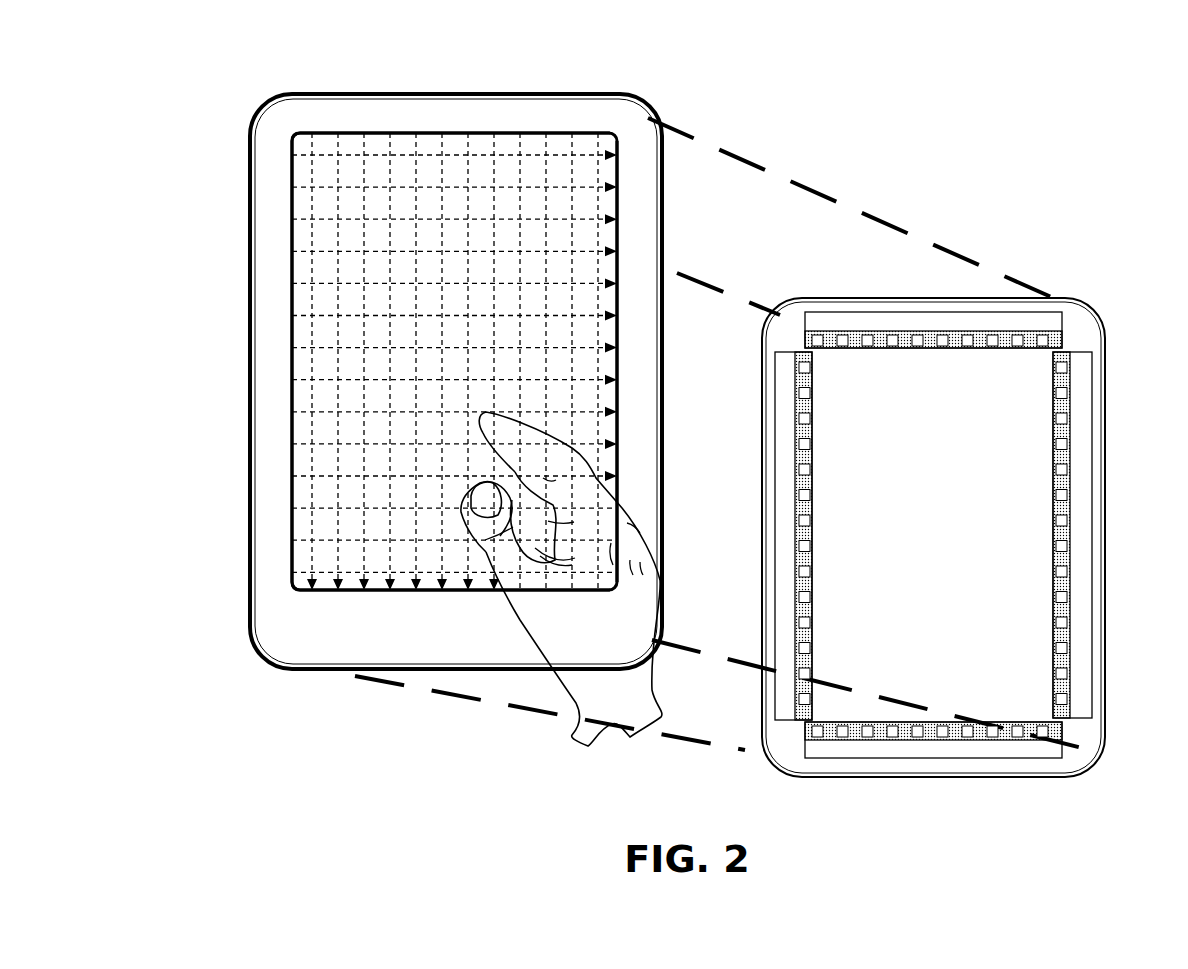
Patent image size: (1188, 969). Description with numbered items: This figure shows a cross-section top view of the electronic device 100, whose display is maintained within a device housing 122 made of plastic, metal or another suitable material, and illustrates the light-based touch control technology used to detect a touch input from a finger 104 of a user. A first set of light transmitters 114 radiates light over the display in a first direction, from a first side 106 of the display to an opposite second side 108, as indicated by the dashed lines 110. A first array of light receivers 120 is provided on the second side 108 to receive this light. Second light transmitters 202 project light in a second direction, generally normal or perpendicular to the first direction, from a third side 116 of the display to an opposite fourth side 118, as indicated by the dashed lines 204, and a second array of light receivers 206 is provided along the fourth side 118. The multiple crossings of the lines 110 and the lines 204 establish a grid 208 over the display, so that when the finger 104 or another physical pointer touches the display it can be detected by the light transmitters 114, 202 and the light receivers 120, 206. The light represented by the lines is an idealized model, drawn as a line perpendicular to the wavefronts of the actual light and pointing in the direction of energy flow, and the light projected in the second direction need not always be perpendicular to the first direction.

The electronic device 100 is at (170, 96).
The finger 104 is at (529, 468).
The first side 106 is at (257, 368).
The second side 108 is at (618, 368).
The dashed lines 110 is at (303, 220).
The first light transmitters 114 is at (797, 513).
The third side 116 is at (428, 129).
The fourth side 118 is at (428, 612).
The first array of light receivers 120 is at (1070, 513).
The device housing 122 is at (612, 114).
The second light transmitters 202 is at (1012, 332).
The dashed lines 204 is at (308, 140).
The second array of light receivers 206 is at (850, 742).
The grid 208 is at (458, 382).